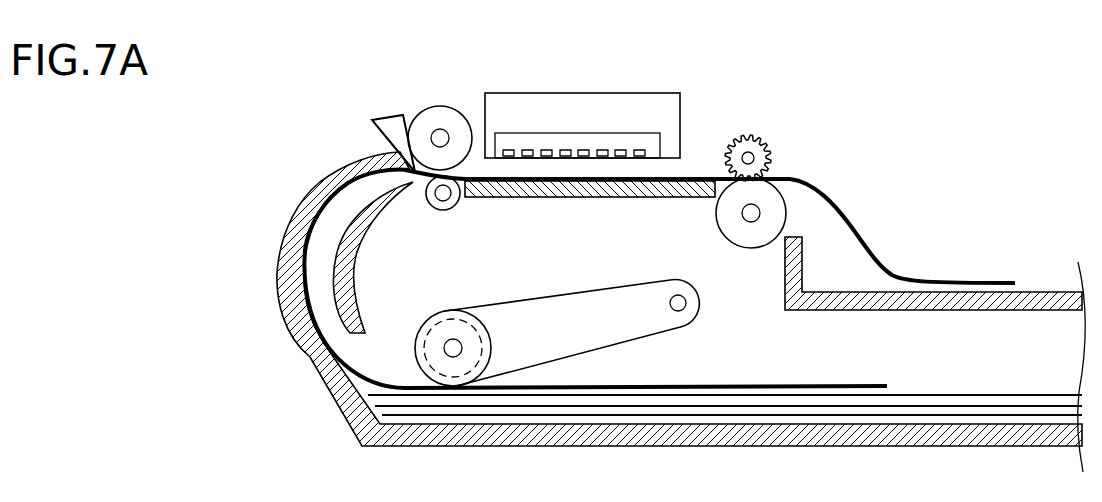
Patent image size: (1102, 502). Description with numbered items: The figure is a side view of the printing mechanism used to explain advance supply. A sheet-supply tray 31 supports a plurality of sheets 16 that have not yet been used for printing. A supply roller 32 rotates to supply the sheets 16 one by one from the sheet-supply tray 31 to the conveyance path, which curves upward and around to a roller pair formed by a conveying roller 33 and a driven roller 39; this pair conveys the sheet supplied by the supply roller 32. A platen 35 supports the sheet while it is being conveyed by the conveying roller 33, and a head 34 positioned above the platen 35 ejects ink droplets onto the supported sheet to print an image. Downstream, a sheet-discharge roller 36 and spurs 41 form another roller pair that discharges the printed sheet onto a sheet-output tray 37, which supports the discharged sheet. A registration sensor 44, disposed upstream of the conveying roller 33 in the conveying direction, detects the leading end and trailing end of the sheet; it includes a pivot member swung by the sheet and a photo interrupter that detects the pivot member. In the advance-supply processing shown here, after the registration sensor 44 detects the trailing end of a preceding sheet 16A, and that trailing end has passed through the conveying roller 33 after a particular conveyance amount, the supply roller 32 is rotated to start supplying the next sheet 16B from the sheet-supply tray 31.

The sheets 16 is at (1015, 395).
The sheet 16A is at (910, 278).
The sheet 16B is at (766, 384).
The sheet-supply tray 31 is at (779, 447).
The supply roller 32 is at (452, 309).
The conveying roller 33 is at (442, 105).
The head 34 is at (580, 93).
The platen 35 is at (582, 199).
The sheet-discharge roller 36 is at (752, 249).
The sheet-output tray 37 is at (935, 311).
The driven roller 39 is at (458, 206).
The spurs 41 is at (748, 135).
The registration sensor 44 is at (392, 118).